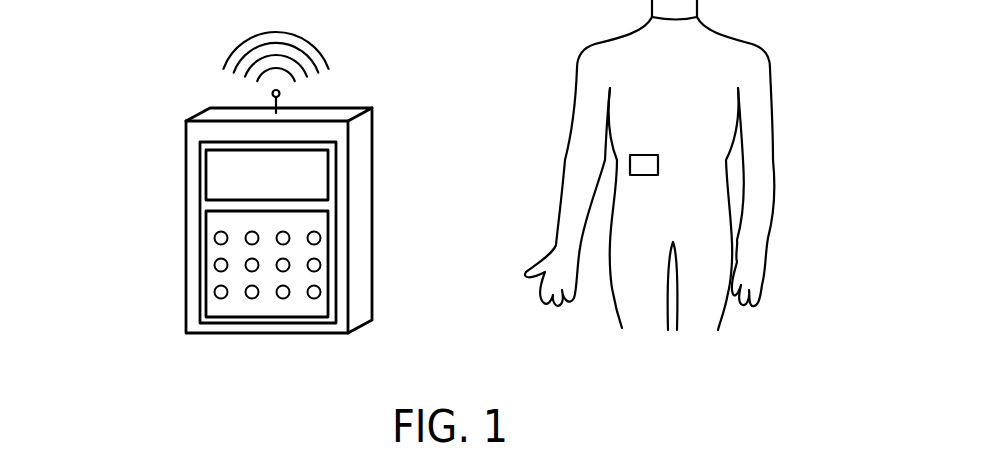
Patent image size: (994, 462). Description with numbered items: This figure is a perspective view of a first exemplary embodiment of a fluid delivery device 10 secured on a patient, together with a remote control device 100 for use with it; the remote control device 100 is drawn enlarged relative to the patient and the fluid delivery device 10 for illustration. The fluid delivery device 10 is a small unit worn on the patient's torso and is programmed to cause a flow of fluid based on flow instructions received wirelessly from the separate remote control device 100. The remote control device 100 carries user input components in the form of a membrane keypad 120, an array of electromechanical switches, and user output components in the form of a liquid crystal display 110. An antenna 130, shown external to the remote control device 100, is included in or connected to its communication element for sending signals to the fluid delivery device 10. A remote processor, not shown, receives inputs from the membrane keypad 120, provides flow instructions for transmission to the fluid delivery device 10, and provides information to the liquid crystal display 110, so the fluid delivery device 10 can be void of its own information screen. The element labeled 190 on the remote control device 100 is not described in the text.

The fluid delivery device 10 is at (637, 160).
The remote control device 100 is at (124, 113).
The liquid crystal display 110 is at (238, 160).
The membrane keypad 120 is at (210, 222).
The antenna 130 is at (278, 103).
The housing 190 is at (337, 238).